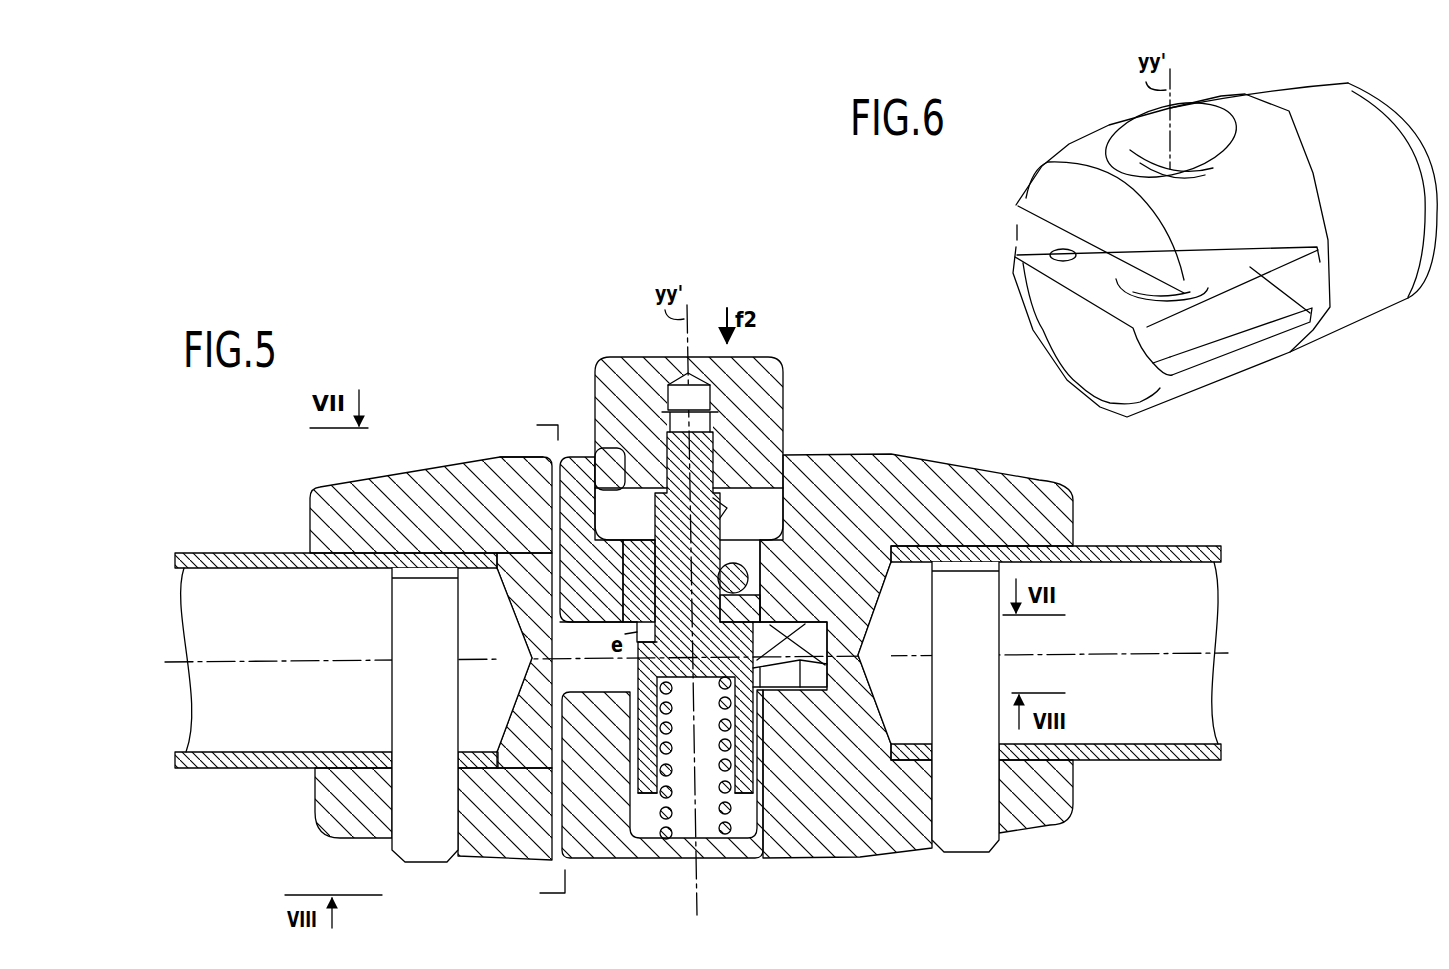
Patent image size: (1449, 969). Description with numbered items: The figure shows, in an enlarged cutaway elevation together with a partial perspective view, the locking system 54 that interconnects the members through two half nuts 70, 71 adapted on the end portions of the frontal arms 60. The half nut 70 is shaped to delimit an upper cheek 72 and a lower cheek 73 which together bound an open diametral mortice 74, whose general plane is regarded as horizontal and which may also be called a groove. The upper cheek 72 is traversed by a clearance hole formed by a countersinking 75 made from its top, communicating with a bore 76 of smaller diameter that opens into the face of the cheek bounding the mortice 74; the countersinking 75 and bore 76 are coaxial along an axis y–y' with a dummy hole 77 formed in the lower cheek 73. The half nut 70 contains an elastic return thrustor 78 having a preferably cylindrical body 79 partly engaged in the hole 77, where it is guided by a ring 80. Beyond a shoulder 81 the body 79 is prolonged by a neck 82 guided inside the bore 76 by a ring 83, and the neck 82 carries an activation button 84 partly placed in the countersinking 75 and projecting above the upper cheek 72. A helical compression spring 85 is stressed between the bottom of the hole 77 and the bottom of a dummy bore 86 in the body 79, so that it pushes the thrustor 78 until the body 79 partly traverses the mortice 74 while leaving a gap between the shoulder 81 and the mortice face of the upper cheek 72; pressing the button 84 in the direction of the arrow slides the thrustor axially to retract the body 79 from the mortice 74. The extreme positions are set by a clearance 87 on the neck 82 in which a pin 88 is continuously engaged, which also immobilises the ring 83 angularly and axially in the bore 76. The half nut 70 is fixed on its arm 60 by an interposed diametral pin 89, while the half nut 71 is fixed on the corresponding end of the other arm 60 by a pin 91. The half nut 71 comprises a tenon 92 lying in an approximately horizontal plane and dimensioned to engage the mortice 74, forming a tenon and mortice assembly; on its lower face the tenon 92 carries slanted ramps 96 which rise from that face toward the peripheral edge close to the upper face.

In FIG. 5, the locking system 54 is at (507, 447).
In FIG. 5, the frontal arm 60 is at (227, 545).
In FIG. 5, the half nut 70 is at (1022, 486).
In FIG. 6, the half nut 70 is at (1413, 128).
In FIG. 5, the half nut 71 is at (337, 510).
In FIG. 6, the upper cheek 72 is at (1091, 135).
In FIG. 6, the lower cheek 73 is at (1272, 372).
In FIG. 6, the mortice 74 is at (1033, 242).
In FIG. 5, the countersinking 75 is at (617, 473).
In FIG. 6, the countersinking 75 is at (1214, 138).
In FIG. 6, the bore 76 is at (1211, 169).
In FIG. 5, the dummy hole 77 is at (654, 858).
In FIG. 6, the dummy hole 77 is at (1194, 291).
In FIG. 5, the elastic return thrustor 78 is at (645, 357).
In FIG. 5, the body 79 is at (726, 792).
In FIG. 5, the ring 80 is at (634, 718).
In FIG. 5, the shoulder 81 is at (867, 667).
In FIG. 5, the neck 82 is at (664, 514).
In FIG. 5, the ring 83 is at (640, 600).
In FIG. 5, the activation button 84 is at (612, 397).
In FIG. 5, the spring 85 is at (722, 840).
In FIG. 5, the dummy bore 86 is at (645, 784).
In FIG. 5, the clearance 87 is at (727, 530).
In FIG. 5, the pin 88 is at (748, 583).
In FIG. 5, the diametral pin 89 is at (978, 838).
In FIG. 5, the pin 91 is at (437, 838).
In FIG. 5, the tenon 92 is at (535, 650).
In FIG. 5, the ramp 96 is at (810, 688).